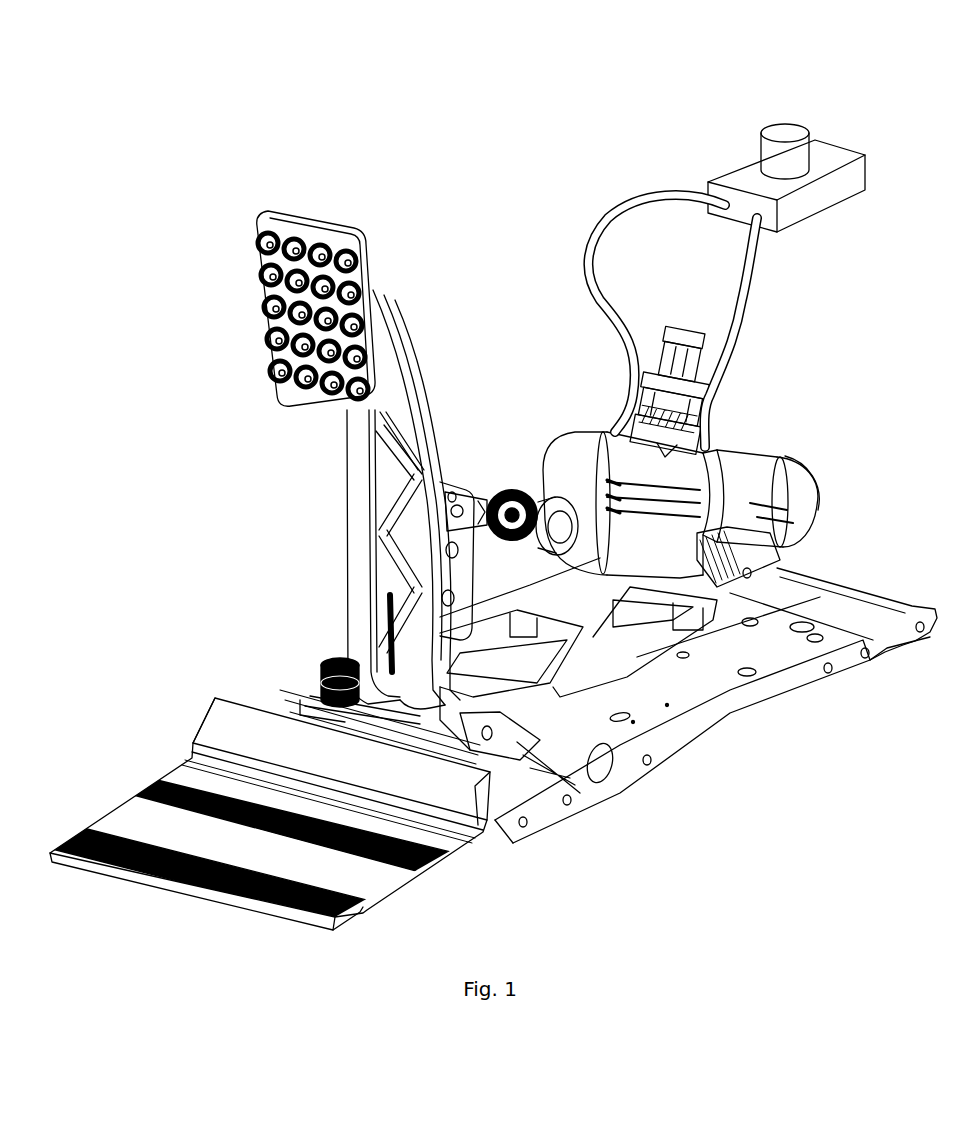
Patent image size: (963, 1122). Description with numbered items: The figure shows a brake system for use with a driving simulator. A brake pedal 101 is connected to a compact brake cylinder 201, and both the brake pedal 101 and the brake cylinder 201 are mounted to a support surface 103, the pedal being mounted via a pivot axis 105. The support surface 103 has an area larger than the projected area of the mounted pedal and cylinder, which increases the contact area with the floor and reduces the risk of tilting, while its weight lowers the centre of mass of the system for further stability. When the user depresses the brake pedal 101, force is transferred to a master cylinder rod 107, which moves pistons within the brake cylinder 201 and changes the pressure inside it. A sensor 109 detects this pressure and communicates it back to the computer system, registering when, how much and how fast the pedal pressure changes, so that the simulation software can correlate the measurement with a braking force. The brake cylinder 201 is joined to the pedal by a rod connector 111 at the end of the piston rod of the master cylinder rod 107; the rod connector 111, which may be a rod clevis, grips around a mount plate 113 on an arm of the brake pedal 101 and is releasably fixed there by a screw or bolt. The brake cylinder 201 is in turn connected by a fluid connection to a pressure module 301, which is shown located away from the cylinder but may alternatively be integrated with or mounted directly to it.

The brake pedal 101 is at (330, 214).
The support surface 103 is at (663, 752).
The pivot axis 105 is at (412, 708).
The master cylinder rod 107 is at (562, 500).
The sensor 109 is at (689, 328).
The rod connector 111 is at (476, 508).
The mount plate 113 is at (462, 548).
The brake cylinder 201 is at (705, 442).
The pressure module 301 is at (830, 158).